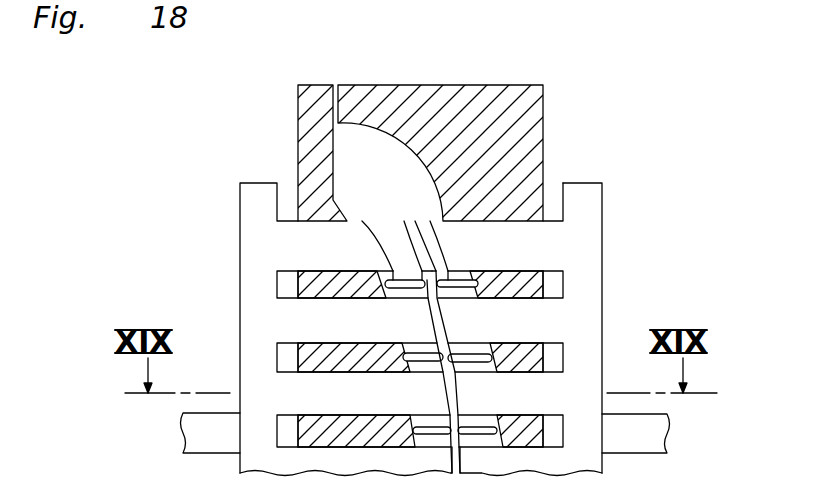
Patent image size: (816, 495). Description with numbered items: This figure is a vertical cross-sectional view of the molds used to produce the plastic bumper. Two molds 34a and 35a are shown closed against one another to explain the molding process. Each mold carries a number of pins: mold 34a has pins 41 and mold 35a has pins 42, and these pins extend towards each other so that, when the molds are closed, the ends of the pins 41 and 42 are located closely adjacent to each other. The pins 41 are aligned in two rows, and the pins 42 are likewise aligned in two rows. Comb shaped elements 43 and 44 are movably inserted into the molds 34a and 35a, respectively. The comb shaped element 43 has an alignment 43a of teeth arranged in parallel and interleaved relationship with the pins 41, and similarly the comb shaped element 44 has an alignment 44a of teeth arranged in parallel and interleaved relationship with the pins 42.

The mold 34a is at (298, 103).
The mold 35a is at (518, 85).
The pins 41 is at (362, 221).
The pins 42 is at (416, 219).
The comb shaped element 43 is at (250, 250).
The comb shaped element 44 is at (594, 250).
The alignment of teeth 43a is at (338, 255).
The alignment of teeth 44a is at (540, 255).